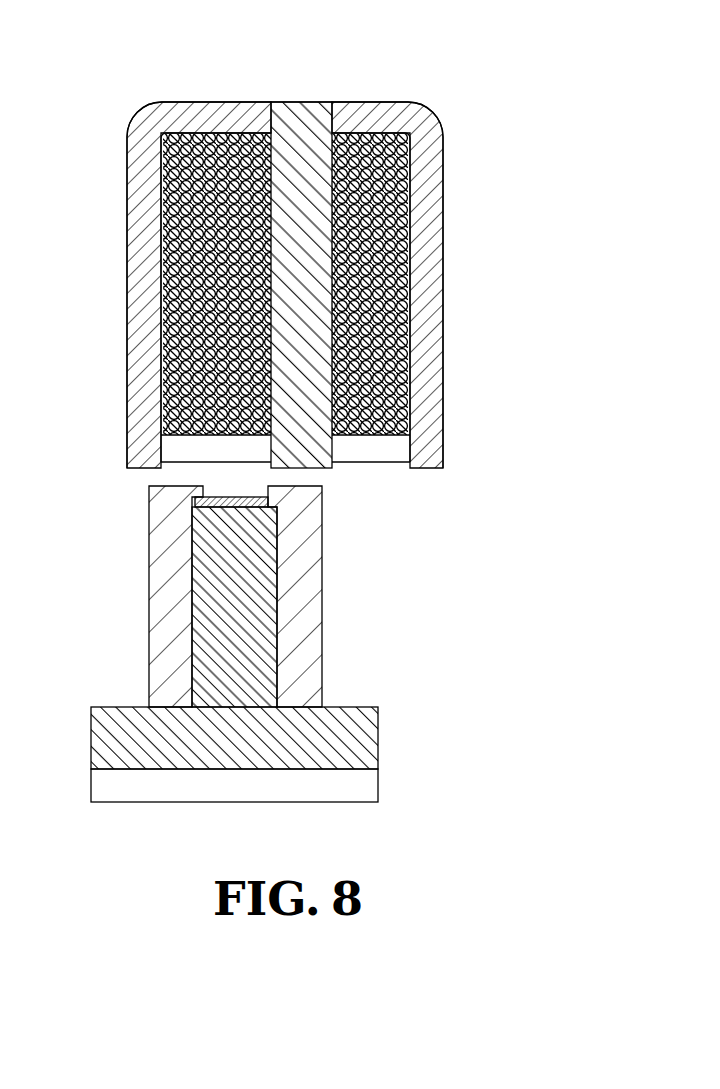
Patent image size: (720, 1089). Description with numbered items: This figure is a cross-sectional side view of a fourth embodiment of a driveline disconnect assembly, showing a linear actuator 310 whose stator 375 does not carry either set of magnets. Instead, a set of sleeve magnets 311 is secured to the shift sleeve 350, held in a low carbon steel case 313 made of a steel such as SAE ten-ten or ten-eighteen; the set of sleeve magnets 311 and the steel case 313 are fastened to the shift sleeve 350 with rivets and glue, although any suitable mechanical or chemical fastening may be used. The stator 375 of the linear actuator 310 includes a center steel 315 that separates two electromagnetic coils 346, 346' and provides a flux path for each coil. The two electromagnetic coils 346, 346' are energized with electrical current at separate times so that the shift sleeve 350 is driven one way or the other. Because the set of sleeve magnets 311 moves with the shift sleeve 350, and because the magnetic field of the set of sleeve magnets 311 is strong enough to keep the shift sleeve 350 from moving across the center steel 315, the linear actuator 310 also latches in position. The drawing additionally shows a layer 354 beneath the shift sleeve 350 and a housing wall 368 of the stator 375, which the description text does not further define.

The linear actuator 310 is at (315, 246).
The set of sleeve magnets 311 is at (193, 613).
The steel case 313 is at (320, 577).
The center steel 315 is at (300, 102).
The electromagnetic coil 346 is at (216, 243).
The electromagnetic coil 346' is at (378, 243).
The shift sleeve 350 is at (378, 733).
The substrate layer 354 is at (378, 783).
The housing wall 368 is at (127, 285).
The stator 375 is at (445, 157).